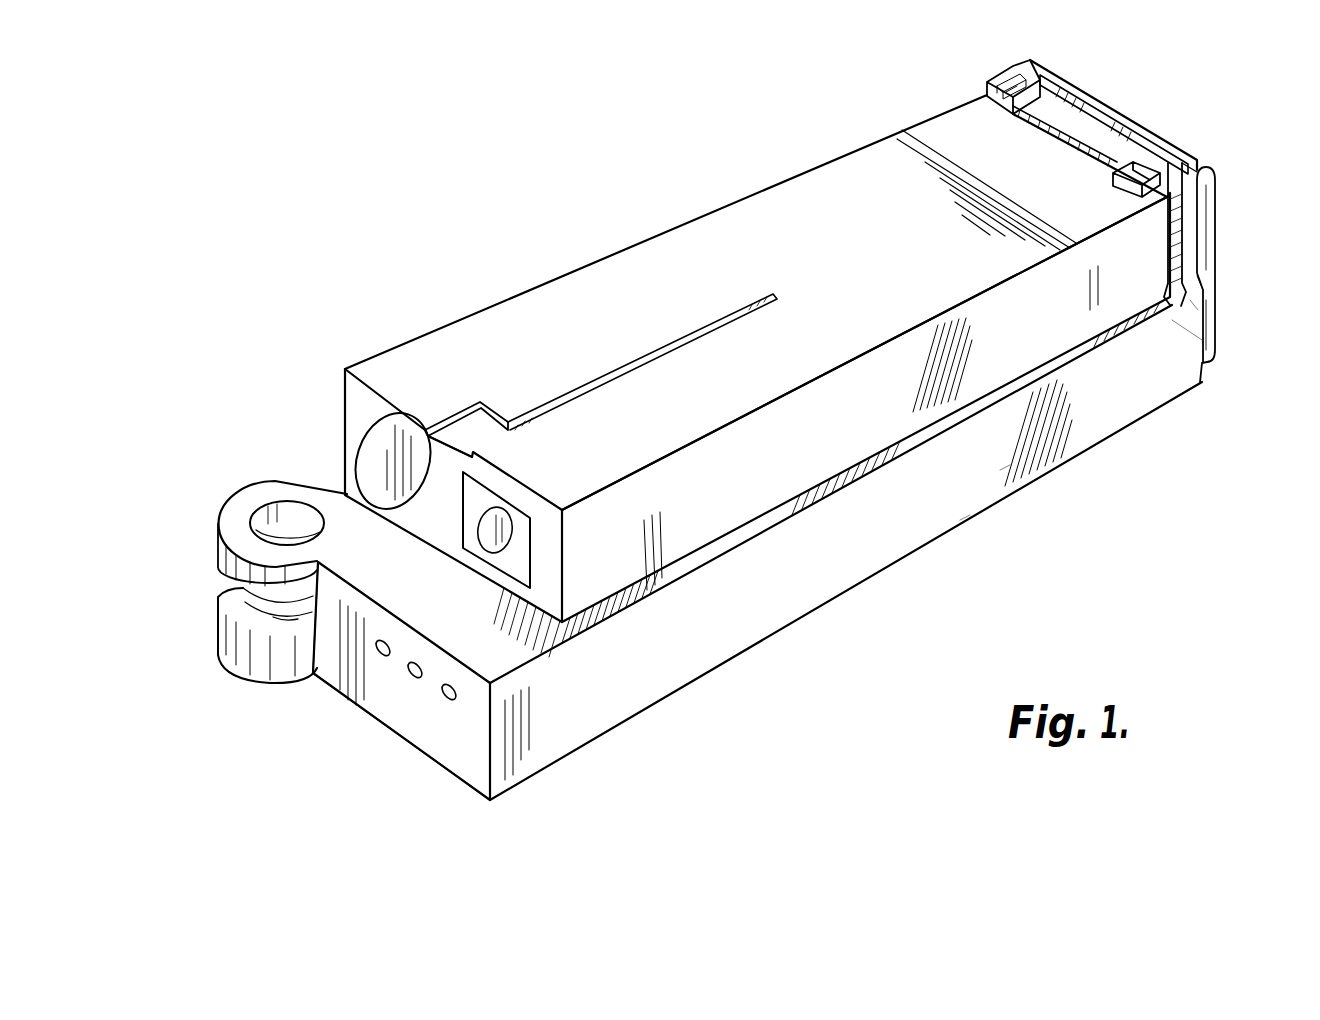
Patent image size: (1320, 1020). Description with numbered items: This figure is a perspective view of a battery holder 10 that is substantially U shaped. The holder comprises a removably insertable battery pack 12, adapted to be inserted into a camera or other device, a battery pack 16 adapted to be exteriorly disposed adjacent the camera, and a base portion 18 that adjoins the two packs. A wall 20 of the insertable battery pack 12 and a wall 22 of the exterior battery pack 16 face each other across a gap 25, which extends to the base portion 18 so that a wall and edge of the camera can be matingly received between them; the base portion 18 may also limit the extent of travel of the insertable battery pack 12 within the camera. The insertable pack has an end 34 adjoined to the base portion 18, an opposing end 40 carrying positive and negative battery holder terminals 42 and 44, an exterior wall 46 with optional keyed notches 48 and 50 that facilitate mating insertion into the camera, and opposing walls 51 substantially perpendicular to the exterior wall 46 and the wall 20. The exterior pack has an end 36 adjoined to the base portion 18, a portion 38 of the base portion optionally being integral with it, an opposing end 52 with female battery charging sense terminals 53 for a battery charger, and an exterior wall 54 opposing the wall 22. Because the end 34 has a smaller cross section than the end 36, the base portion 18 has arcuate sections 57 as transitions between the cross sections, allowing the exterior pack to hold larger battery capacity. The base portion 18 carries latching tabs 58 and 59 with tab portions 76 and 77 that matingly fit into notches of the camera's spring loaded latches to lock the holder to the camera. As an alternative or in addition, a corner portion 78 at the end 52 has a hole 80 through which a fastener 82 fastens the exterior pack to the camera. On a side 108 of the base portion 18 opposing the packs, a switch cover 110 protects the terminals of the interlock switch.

The battery holder 10 is at (680, 179).
The removably insertable battery pack 12 is at (1032, 343).
The battery pack adapted to be exteriorly disposed 16 is at (1055, 454).
The base portion 18 is at (1183, 258).
The wall 20 is at (830, 497).
The wall 22 is at (768, 607).
The gap 25 is at (990, 505).
The end 34 is at (1165, 233).
The end 36 is at (1172, 340).
The portion 38 is at (1193, 303).
The end 40 is at (355, 401).
The positive battery holder terminal 42 is at (494, 538).
The negative battery holder terminal 44 is at (377, 447).
The exterior wall 46 is at (905, 248).
The keyed notch 48 is at (706, 328).
The keyed notch 50 is at (483, 422).
The opposing walls 51 is at (828, 445).
The end 52 is at (337, 675).
The female battery charging sense terminals 53 is at (449, 700).
The exterior wall 54 is at (683, 687).
The arcuate sections 57 is at (1200, 280).
The latching tab 58 is at (1196, 180).
The latching tab 59 is at (989, 83).
The tab portion 76 is at (1177, 143).
The tab portion 77 is at (1029, 82).
The corner portion 78 is at (266, 488).
The hole 80 is at (258, 530).
The fastener 82 is at (226, 596).
The side 108 is at (1110, 104).
The switch cover 110 is at (1217, 212).